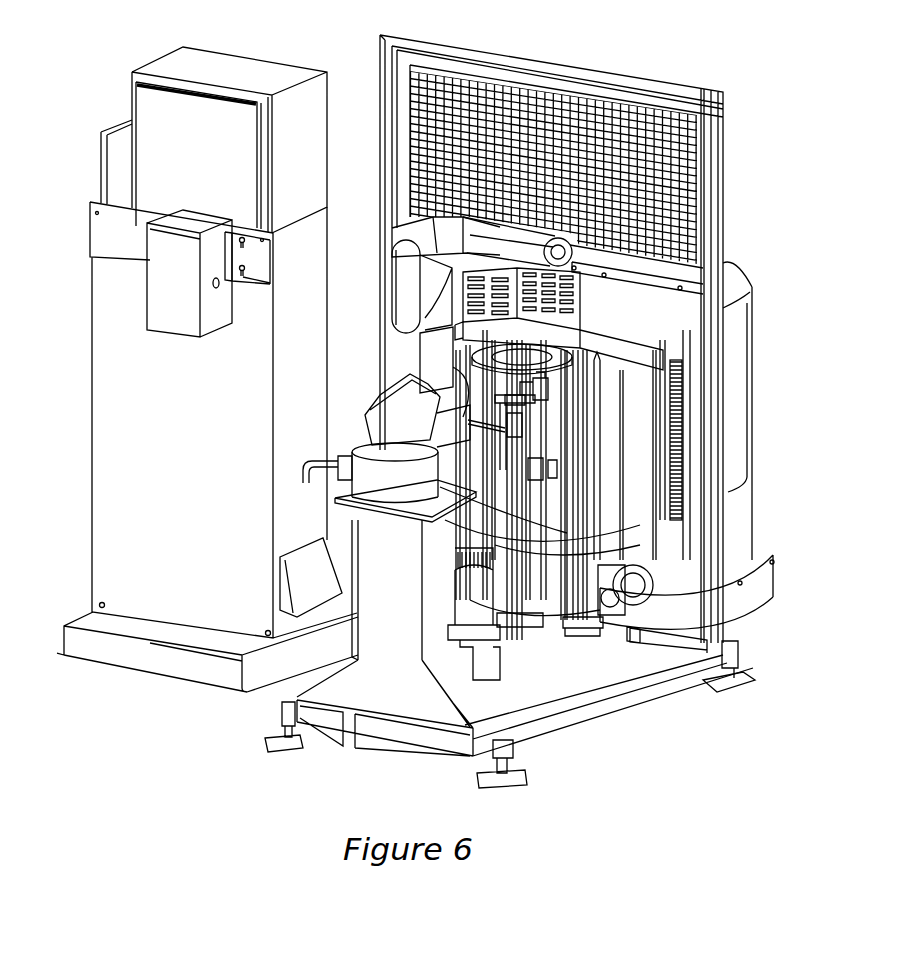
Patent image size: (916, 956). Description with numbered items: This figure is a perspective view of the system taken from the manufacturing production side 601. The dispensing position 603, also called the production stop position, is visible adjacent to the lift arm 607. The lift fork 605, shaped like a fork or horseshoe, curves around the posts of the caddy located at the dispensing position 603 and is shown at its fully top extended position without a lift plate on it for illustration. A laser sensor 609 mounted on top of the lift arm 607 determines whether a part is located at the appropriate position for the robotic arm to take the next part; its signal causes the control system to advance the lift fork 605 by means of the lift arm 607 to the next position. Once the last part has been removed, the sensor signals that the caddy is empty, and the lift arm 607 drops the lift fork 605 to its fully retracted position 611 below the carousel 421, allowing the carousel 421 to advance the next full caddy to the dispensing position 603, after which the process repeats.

The manufacturing production side 601 is at (600, 737).
The dispensing position 603 is at (632, 632).
The lift fork 605 is at (550, 370).
The lift arm 607 is at (493, 490).
The laser sensor 609 is at (540, 390).
The fully retracted position 611 is at (538, 497).
The carousel 421 is at (633, 517).